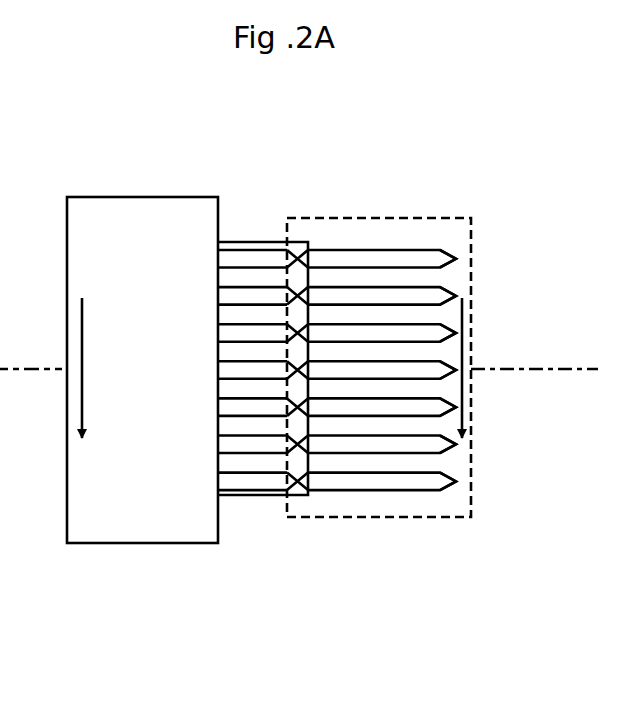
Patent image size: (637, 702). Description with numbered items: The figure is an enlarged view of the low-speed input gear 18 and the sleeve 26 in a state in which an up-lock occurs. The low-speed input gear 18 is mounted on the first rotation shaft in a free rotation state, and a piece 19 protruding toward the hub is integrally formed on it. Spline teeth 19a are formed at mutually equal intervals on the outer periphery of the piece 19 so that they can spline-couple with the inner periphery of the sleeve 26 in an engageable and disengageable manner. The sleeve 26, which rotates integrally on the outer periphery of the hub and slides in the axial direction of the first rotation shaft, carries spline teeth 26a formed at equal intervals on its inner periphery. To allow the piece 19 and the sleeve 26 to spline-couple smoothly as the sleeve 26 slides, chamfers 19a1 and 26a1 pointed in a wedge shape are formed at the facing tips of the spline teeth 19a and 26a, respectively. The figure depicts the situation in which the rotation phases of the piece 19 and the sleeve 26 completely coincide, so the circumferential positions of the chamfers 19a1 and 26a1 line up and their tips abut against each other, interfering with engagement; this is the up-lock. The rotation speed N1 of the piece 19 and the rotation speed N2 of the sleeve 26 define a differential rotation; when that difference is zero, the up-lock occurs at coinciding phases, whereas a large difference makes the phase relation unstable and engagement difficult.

The low-speed input gear 18 is at (167, 560).
The piece 19 is at (272, 377).
The spline teeth 19a is at (246, 445).
The chamfer 19a1 is at (301, 255).
The sleeve 26 is at (427, 377).
The spline teeth 26a is at (437, 321).
The chamfer 26a1 is at (453, 449).
The rotation speed of the pieces N1 is at (100, 368).
The rotation speed of the sleeve N2 is at (482, 368).